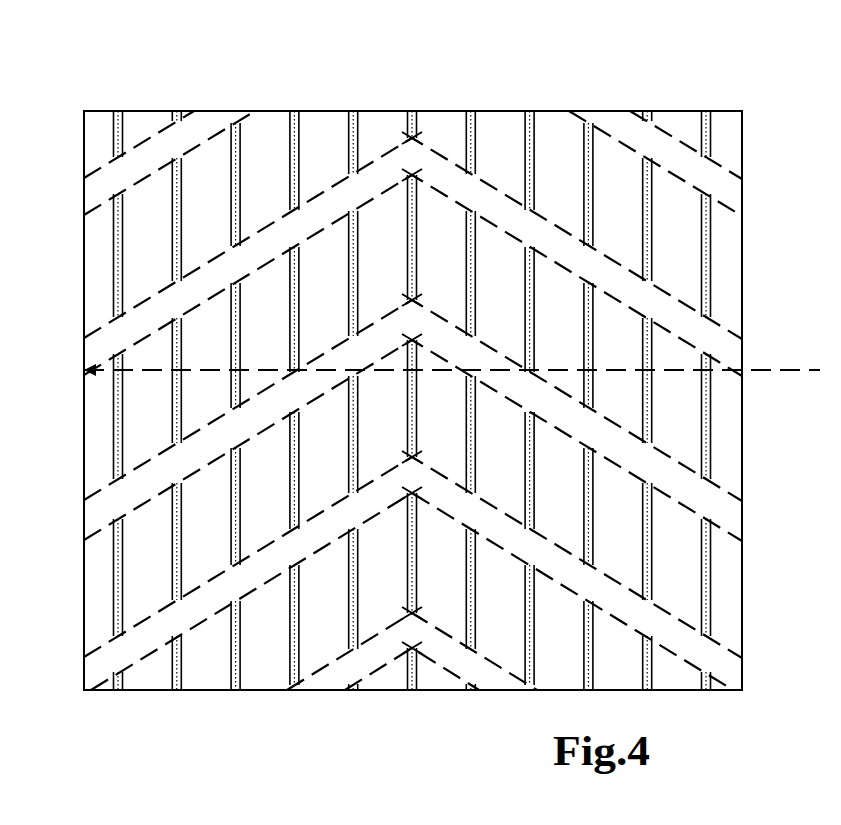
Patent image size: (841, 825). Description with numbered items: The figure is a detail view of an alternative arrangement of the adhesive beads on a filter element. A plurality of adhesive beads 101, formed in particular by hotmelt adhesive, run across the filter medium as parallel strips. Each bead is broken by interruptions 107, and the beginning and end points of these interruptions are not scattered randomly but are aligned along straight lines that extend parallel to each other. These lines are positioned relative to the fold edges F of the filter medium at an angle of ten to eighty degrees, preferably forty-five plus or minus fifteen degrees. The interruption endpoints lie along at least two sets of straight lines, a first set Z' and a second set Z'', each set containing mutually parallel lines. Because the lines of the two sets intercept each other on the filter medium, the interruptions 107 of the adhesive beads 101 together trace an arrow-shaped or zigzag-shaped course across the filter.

The adhesive beads 101 is at (350, 143).
The interruptions 107 is at (355, 177).
The fold edges F is at (764, 368).
The first set of straight lines Z' is at (756, 563).
The second set of straight lines Z'' is at (69, 559).